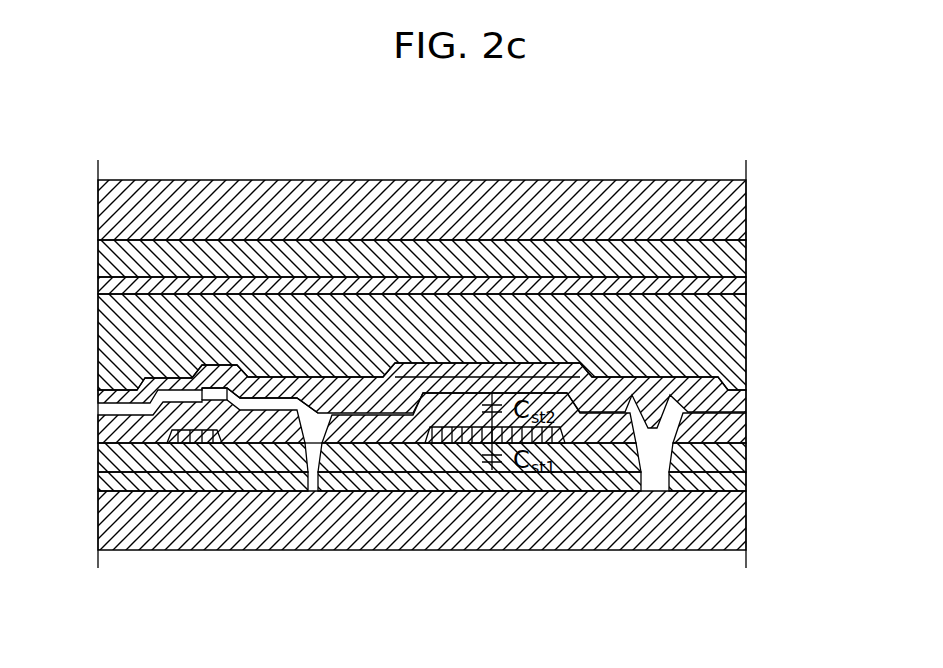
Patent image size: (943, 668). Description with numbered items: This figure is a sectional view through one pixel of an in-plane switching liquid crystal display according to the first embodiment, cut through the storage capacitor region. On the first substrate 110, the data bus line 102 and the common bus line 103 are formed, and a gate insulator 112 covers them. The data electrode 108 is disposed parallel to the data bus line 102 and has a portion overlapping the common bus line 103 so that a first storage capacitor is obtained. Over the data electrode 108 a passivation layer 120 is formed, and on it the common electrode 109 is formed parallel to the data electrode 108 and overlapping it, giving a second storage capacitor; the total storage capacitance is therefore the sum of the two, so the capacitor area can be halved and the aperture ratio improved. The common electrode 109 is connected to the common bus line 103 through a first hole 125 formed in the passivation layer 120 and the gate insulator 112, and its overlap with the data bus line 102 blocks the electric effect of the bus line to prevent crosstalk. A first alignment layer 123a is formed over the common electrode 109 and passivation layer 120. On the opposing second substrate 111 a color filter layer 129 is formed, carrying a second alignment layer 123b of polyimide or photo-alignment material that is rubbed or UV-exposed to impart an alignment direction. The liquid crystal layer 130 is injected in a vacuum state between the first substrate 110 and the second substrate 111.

The data bus line 102 is at (195, 445).
The common bus line 103 is at (746, 478).
The data electrode 108 is at (455, 445).
The common electrode 109 is at (330, 440).
The first substrate 110 is at (637, 535).
The second substrate 111 is at (617, 207).
The gate insulator 112 is at (746, 460).
The passivation layer 120 is at (746, 425).
The first alignment layer 123a is at (746, 392).
The second alignment layer 123b is at (746, 285).
The first hole 125 is at (300, 455).
The color filter layer 129 is at (746, 252).
The liquid crystal layer 130 is at (115, 323).